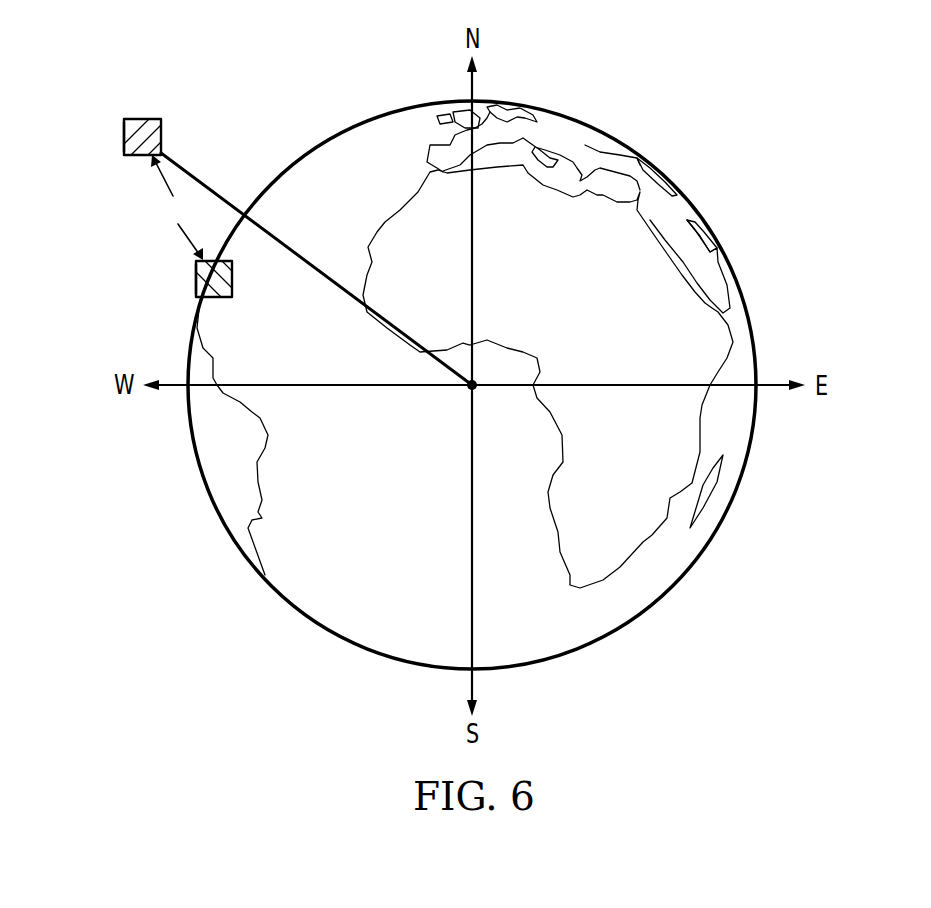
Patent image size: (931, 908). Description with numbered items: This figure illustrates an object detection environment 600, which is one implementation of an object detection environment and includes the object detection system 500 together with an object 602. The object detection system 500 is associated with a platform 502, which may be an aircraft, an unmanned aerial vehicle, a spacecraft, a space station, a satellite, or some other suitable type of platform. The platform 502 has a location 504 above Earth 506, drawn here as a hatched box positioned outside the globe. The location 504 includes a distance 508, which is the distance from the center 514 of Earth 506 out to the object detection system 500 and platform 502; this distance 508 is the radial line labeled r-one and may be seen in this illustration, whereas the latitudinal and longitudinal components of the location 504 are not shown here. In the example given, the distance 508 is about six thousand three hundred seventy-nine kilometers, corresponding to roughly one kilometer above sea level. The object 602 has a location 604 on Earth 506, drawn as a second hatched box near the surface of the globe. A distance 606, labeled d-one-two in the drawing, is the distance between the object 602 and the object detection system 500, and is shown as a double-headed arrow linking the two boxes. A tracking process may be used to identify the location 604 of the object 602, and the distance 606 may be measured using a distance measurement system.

The object detection system 500 is at (107, 114).
The platform 502 is at (148, 119).
The location 504 is at (77, 148).
The Earth 506 is at (582, 60).
The distance 508 is at (308, 261).
The center 514 is at (465, 393).
The object detection environment 600 is at (472, 349).
The object 602 is at (221, 298).
The location 604 is at (187, 291).
The distance 606 is at (186, 235).